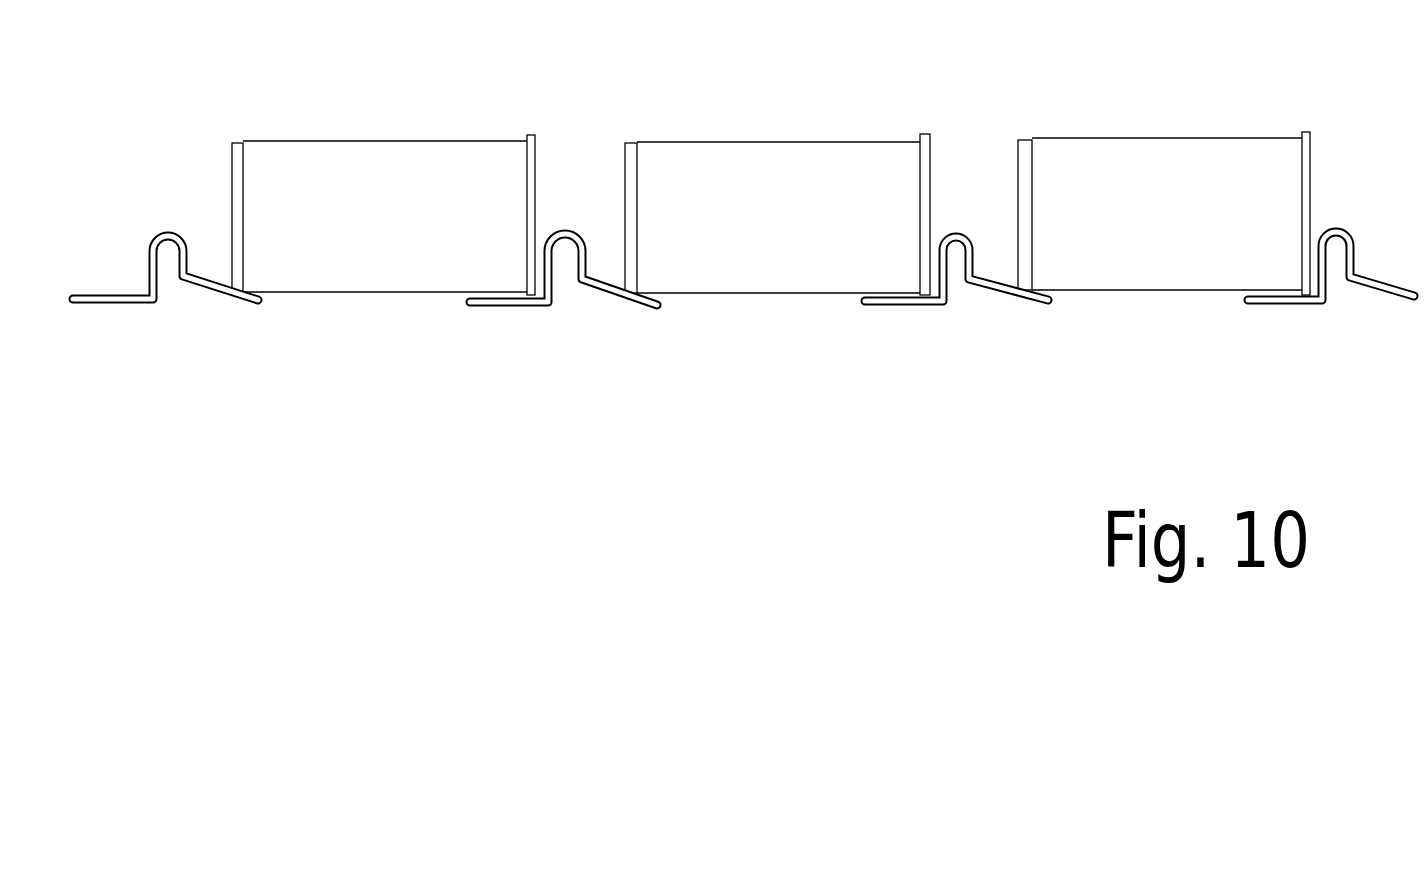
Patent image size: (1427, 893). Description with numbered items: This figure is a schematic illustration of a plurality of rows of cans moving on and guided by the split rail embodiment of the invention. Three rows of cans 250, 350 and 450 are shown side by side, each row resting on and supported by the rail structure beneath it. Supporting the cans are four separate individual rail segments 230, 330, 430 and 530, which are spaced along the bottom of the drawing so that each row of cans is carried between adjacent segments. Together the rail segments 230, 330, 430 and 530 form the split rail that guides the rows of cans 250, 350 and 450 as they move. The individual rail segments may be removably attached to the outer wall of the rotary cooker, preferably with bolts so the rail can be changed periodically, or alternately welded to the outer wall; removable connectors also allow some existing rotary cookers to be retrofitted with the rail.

The row of cans 250 is at (372, 117).
The row of cans 350 is at (737, 118).
The row of cans 450 is at (1137, 115).
The rail segment 230 is at (140, 317).
The rail segment 330 is at (538, 315).
The rail segment 430 is at (928, 313).
The rail segment 530 is at (1298, 312).